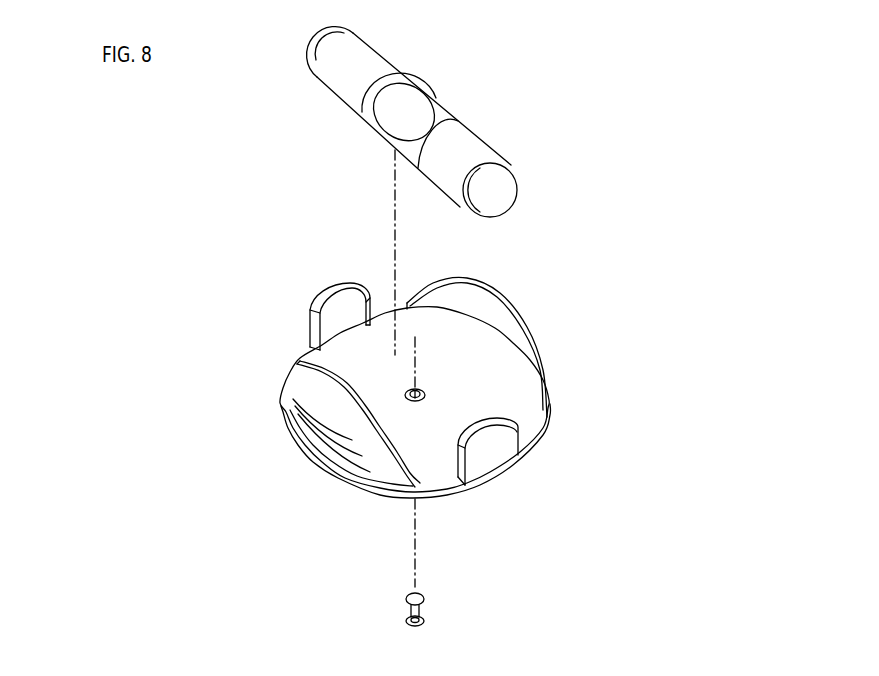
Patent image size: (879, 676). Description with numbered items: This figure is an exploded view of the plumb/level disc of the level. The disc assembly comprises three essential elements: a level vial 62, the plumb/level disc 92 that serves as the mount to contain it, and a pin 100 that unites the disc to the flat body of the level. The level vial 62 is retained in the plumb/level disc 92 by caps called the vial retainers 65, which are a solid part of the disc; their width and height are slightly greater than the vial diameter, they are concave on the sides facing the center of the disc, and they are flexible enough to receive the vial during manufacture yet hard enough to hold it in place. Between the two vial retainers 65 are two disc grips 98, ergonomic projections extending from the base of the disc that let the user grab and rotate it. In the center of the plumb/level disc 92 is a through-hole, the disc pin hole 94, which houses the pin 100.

The level vial 62 is at (472, 147).
The vial retainers 65 is at (320, 308).
The plumb/level disc 92 is at (258, 373).
The disc pin hole 94 is at (425, 390).
The disc grips 98 is at (327, 390).
The pin 100 is at (432, 605).